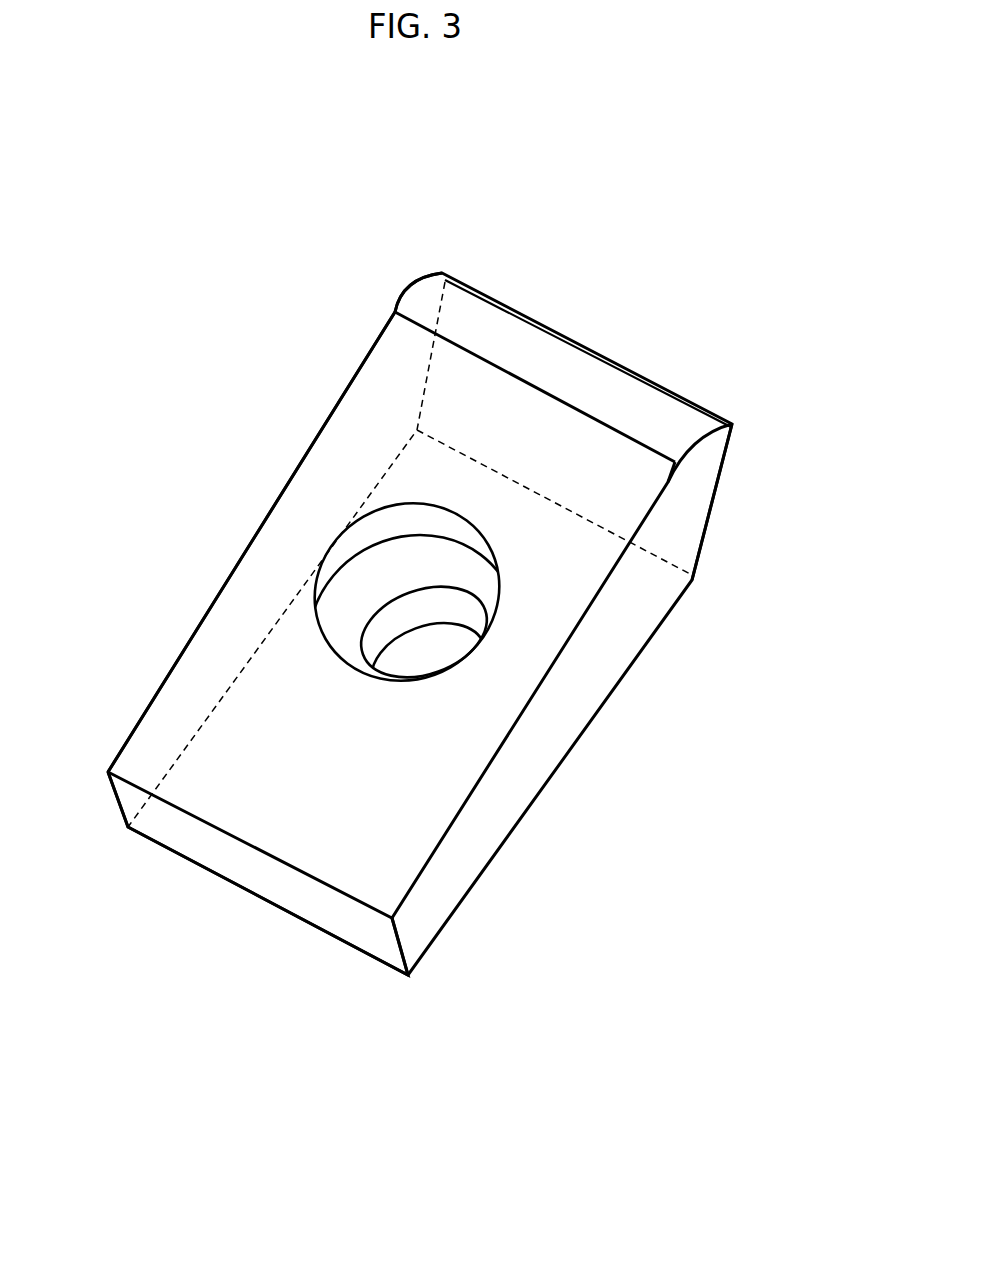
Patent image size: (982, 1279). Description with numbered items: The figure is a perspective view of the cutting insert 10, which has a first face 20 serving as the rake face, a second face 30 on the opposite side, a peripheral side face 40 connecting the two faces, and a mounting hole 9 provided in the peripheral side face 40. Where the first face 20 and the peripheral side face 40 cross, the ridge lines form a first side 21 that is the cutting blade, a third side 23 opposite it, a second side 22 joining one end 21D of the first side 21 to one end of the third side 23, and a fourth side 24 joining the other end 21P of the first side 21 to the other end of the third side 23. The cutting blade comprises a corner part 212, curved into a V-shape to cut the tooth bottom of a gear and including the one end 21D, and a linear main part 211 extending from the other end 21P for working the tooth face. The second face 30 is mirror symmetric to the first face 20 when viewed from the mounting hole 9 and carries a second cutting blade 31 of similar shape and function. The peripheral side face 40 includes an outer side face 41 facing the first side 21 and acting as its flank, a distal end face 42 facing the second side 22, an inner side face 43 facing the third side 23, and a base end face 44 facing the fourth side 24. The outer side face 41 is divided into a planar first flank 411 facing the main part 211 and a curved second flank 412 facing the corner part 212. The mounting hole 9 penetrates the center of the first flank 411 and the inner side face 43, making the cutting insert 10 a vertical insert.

The cutting insert 10 is at (402, 1140).
The first face 20 is at (467, 833).
The first side 21 is at (562, 595).
The main part 211 is at (505, 735).
The corner part 212 is at (705, 427).
The other end 21P is at (390, 918).
The one end 21D is at (732, 425).
The second side 22 is at (707, 528).
The third side 23 is at (548, 783).
The fourth side 24 is at (397, 942).
The second face 30 is at (190, 705).
The second cutting blade 31 is at (265, 517).
The peripheral side face 40 is at (275, 787).
The outer side face 41 is at (346, 481).
The first flank 411 is at (295, 678).
The second flank 412 is at (460, 332).
The distal end face 42 is at (683, 500).
The inner side face 43 is at (590, 625).
The base end face 44 is at (277, 878).
The mounting hole 9 is at (428, 558).